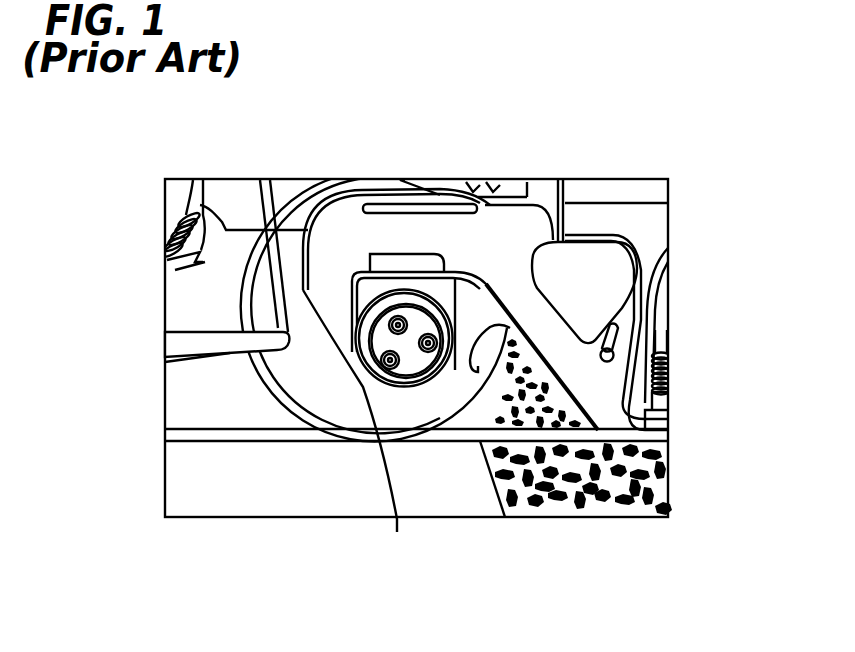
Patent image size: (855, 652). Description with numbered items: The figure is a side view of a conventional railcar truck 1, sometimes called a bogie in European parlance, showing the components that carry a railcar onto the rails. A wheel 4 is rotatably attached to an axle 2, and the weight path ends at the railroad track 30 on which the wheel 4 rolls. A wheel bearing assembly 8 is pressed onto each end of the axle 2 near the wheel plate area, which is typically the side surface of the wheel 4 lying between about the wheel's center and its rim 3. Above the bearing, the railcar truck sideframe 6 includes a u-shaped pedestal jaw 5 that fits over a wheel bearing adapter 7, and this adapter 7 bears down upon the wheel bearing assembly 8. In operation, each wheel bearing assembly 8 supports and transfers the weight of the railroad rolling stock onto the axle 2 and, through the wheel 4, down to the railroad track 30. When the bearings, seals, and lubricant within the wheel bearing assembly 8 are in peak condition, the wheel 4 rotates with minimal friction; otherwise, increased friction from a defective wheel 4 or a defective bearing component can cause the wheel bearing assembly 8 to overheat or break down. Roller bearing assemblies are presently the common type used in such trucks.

The railcar truck 1 is at (345, 158).
The axle 2 is at (428, 292).
The rim 3 is at (252, 382).
The wheel 4 is at (308, 424).
The pedestal jaw 5 is at (462, 369).
The sideframe 6 is at (322, 254).
The wheel bearing adapter 7 is at (460, 290).
The wheel bearing assembly 8 is at (655, 393).
The railroad track 30 is at (245, 436).